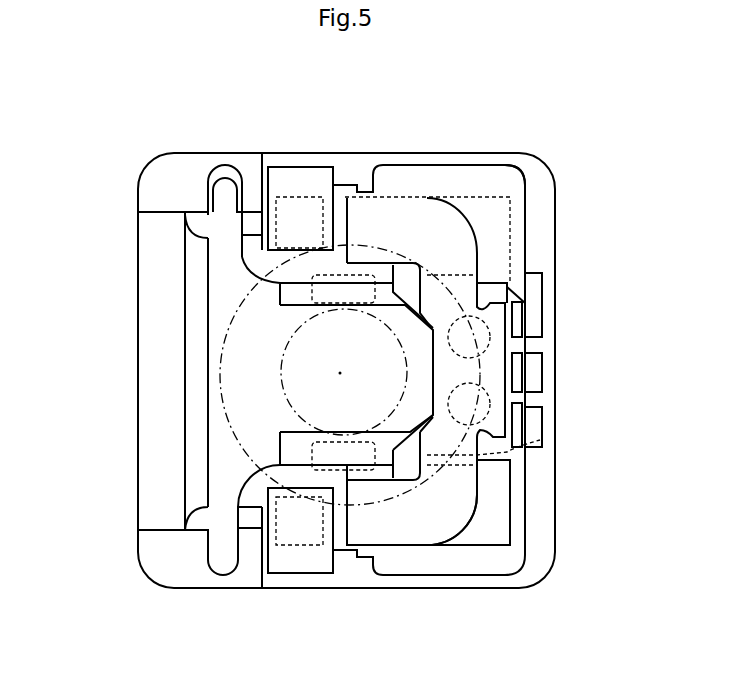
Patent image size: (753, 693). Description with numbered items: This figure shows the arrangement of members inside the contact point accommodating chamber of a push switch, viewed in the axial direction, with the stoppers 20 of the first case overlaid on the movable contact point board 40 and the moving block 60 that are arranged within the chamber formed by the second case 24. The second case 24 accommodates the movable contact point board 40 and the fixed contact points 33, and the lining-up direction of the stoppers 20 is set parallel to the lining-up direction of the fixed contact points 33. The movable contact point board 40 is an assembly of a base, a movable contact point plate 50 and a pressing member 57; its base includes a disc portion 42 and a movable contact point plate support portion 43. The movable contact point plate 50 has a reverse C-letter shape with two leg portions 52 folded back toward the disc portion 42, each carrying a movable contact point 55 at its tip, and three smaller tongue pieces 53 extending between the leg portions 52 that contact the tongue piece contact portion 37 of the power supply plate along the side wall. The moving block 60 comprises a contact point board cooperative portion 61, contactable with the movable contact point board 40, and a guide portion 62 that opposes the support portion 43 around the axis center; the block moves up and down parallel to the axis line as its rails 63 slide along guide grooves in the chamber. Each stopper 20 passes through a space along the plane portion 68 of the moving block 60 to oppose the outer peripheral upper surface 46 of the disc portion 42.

The stopper 20 is at (363, 270).
The second case 24 is at (500, 590).
The fixed contact point 33 is at (320, 198).
The tongue piece contact portion 37 is at (546, 322).
The movable contact point board 40 is at (492, 165).
The disc portion 42 is at (208, 342).
The movable contact point plate support portion 43 is at (528, 288).
The outer peripheral upper surface 46 is at (297, 255).
The movable contact point plate 50 is at (527, 218).
The leg portion 52 is at (465, 535).
The tongue piece 53 is at (530, 313).
The movable contact point 55 is at (290, 185).
The pressing member 57 is at (457, 498).
The moving block 60 is at (208, 421).
The contact point board cooperative portion 61 is at (430, 287).
The guide portion 62 is at (208, 469).
The rail 63 is at (190, 212).
The plane portion 68 is at (298, 318).